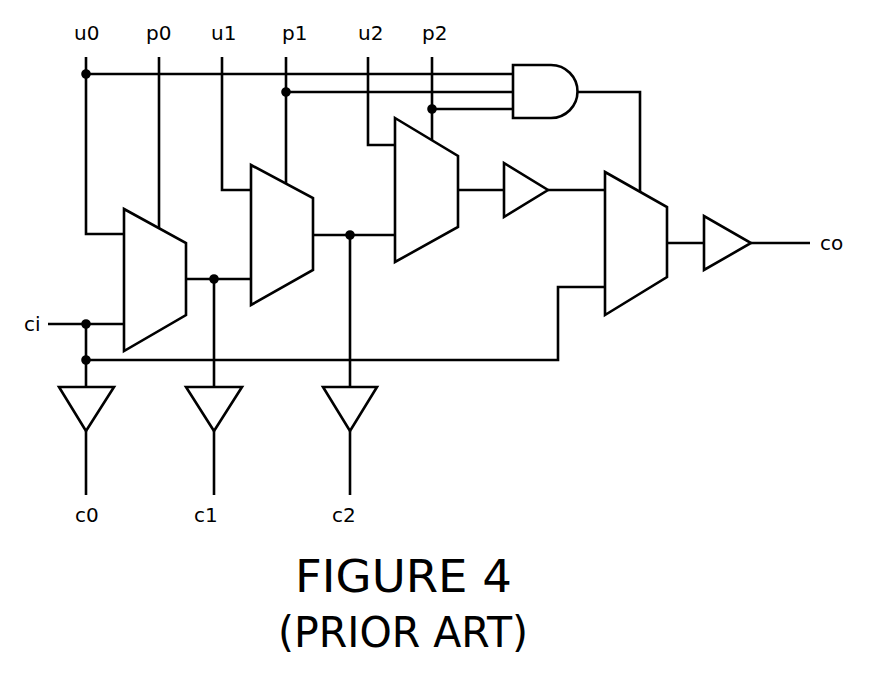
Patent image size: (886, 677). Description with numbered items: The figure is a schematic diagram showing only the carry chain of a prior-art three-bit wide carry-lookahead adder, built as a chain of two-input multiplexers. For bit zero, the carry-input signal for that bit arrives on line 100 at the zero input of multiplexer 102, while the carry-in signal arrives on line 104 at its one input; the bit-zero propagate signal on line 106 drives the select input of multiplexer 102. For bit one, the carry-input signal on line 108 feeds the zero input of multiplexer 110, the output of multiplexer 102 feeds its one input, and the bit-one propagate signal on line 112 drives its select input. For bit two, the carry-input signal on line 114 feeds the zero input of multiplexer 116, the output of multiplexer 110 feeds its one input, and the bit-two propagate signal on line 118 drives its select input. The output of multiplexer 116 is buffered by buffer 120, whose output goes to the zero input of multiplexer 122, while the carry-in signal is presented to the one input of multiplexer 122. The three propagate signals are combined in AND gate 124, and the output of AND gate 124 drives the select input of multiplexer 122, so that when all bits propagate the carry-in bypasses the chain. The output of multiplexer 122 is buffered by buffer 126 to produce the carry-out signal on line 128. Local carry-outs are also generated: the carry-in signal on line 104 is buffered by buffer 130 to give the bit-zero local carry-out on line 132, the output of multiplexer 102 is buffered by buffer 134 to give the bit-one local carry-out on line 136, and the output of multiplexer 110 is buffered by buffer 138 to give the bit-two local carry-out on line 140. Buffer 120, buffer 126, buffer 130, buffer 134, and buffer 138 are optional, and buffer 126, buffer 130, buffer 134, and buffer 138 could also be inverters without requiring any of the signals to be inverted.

The line 100 is at (89, 62).
The multiplexer 102 is at (181, 232).
The line 104 is at (66, 315).
The line 106 is at (162, 62).
The line 108 is at (225, 62).
The multiplexer 110 is at (302, 186).
The line 112 is at (289, 62).
The line 114 is at (371, 62).
The multiplexer 116 is at (436, 252).
The line 118 is at (435, 62).
The buffer 120 is at (531, 168).
The multiplexer 122 is at (654, 196).
The AND gate 124 is at (569, 66).
The buffer 126 is at (729, 221).
The line 128 is at (779, 239).
The buffer 130 is at (100, 418).
The line 132 is at (77, 470).
The buffer 134 is at (228, 418).
The line 136 is at (205, 470).
The buffer 138 is at (364, 412).
The line 140 is at (341, 463).